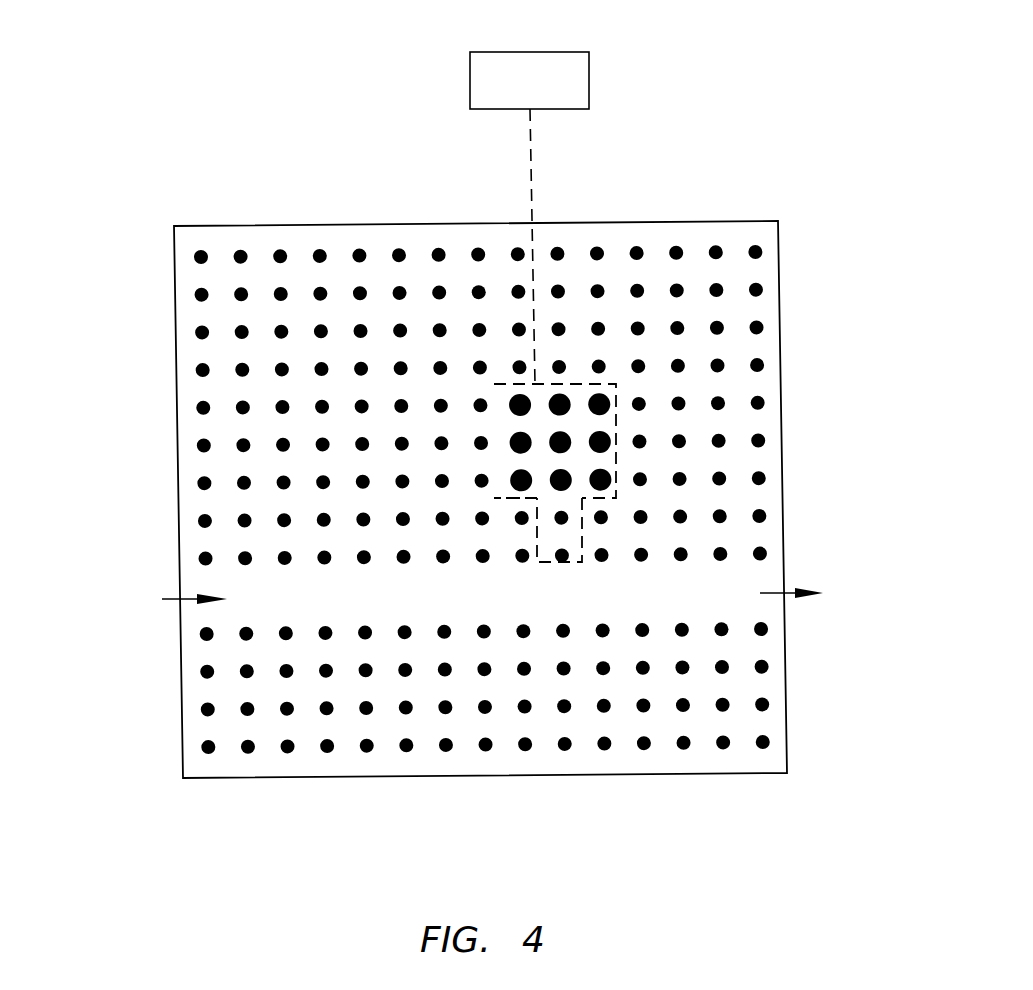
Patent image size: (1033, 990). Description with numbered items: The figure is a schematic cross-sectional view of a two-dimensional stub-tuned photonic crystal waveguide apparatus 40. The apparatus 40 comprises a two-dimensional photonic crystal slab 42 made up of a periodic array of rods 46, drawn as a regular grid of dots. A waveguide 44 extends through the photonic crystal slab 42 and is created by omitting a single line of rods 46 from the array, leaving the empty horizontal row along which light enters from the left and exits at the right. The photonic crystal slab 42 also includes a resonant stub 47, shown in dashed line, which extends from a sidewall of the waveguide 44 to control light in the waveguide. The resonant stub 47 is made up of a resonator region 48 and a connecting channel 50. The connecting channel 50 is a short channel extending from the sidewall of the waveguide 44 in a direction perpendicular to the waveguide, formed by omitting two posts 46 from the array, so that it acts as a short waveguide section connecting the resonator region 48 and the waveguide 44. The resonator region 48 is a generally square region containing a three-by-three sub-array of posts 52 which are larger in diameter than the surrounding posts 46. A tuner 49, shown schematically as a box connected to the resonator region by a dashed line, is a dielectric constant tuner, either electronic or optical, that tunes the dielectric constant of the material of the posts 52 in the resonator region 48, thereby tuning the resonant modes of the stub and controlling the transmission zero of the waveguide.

The two-dimensional stub-tuned photonic crystal waveguide apparatus 40 is at (472, 426).
The two-dimensional photonic crystal slab 42 is at (242, 227).
The waveguide 44 is at (729, 580).
The rods 46 is at (196, 368).
The resonant stub 47 is at (622, 428).
The resonator region 48 is at (580, 419).
The tuner 49 is at (469, 73).
The connecting channel 50 is at (554, 538).
The posts 52 is at (562, 396).